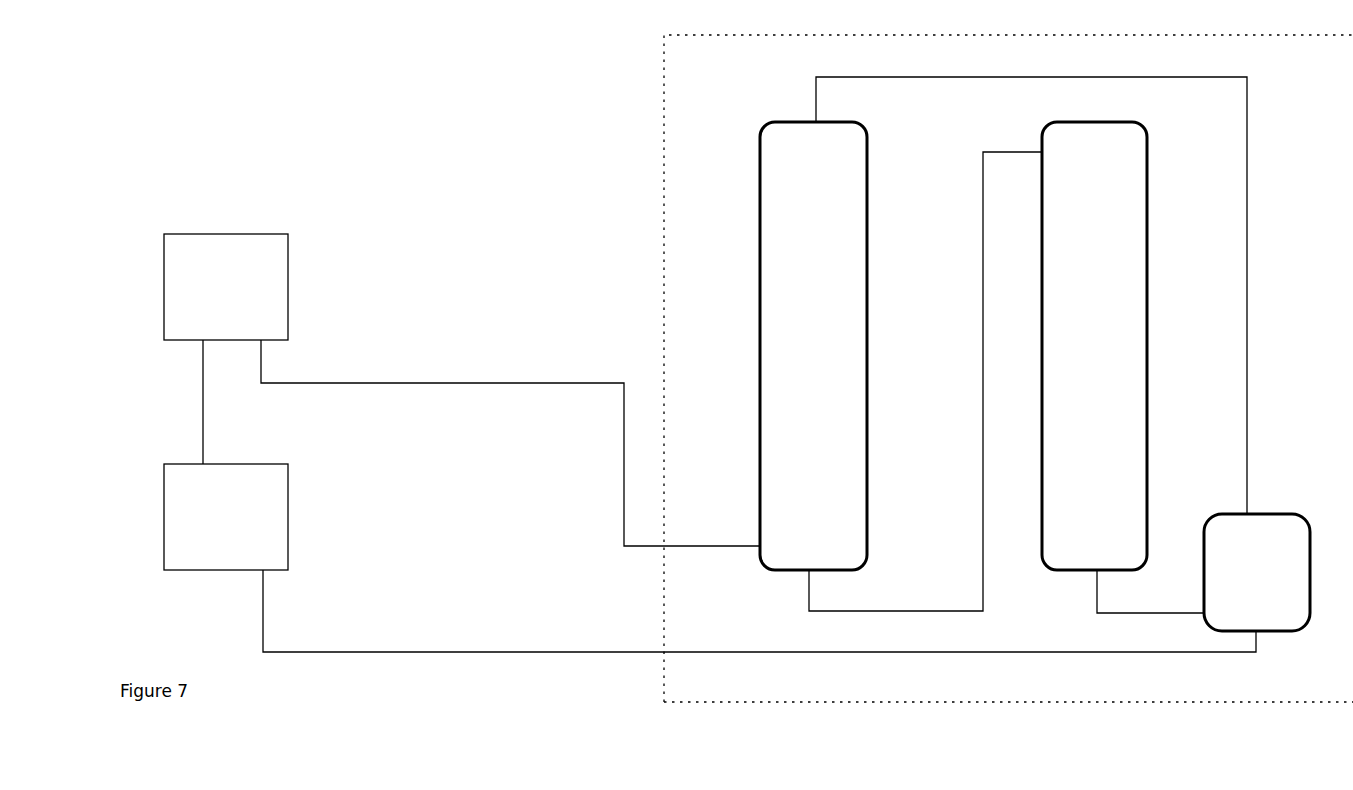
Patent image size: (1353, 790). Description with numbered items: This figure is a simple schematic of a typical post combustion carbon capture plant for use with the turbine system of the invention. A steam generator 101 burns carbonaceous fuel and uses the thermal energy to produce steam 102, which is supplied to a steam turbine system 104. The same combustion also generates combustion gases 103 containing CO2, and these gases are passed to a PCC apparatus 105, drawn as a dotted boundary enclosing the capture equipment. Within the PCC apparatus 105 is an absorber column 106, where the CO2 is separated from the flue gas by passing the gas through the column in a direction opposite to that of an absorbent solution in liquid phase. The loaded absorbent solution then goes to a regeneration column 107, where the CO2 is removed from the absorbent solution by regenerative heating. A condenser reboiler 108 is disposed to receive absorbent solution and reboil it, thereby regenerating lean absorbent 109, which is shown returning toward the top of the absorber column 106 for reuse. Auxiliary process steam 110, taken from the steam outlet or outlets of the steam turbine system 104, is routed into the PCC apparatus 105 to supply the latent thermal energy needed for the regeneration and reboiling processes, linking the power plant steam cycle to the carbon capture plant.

The steam generator 101 is at (226, 287).
The steam 102 is at (202, 415).
The combustion gases 103 is at (468, 383).
The steam turbine system 104 is at (226, 517).
The PCC apparatus 105 is at (663, 78).
The absorber column 106 is at (813, 346).
The regeneration column 107 is at (1094, 346).
The condenser reboiler 108 is at (1257, 572).
The lean absorbent 109 is at (1248, 343).
The auxiliary process steam 110 is at (470, 652).